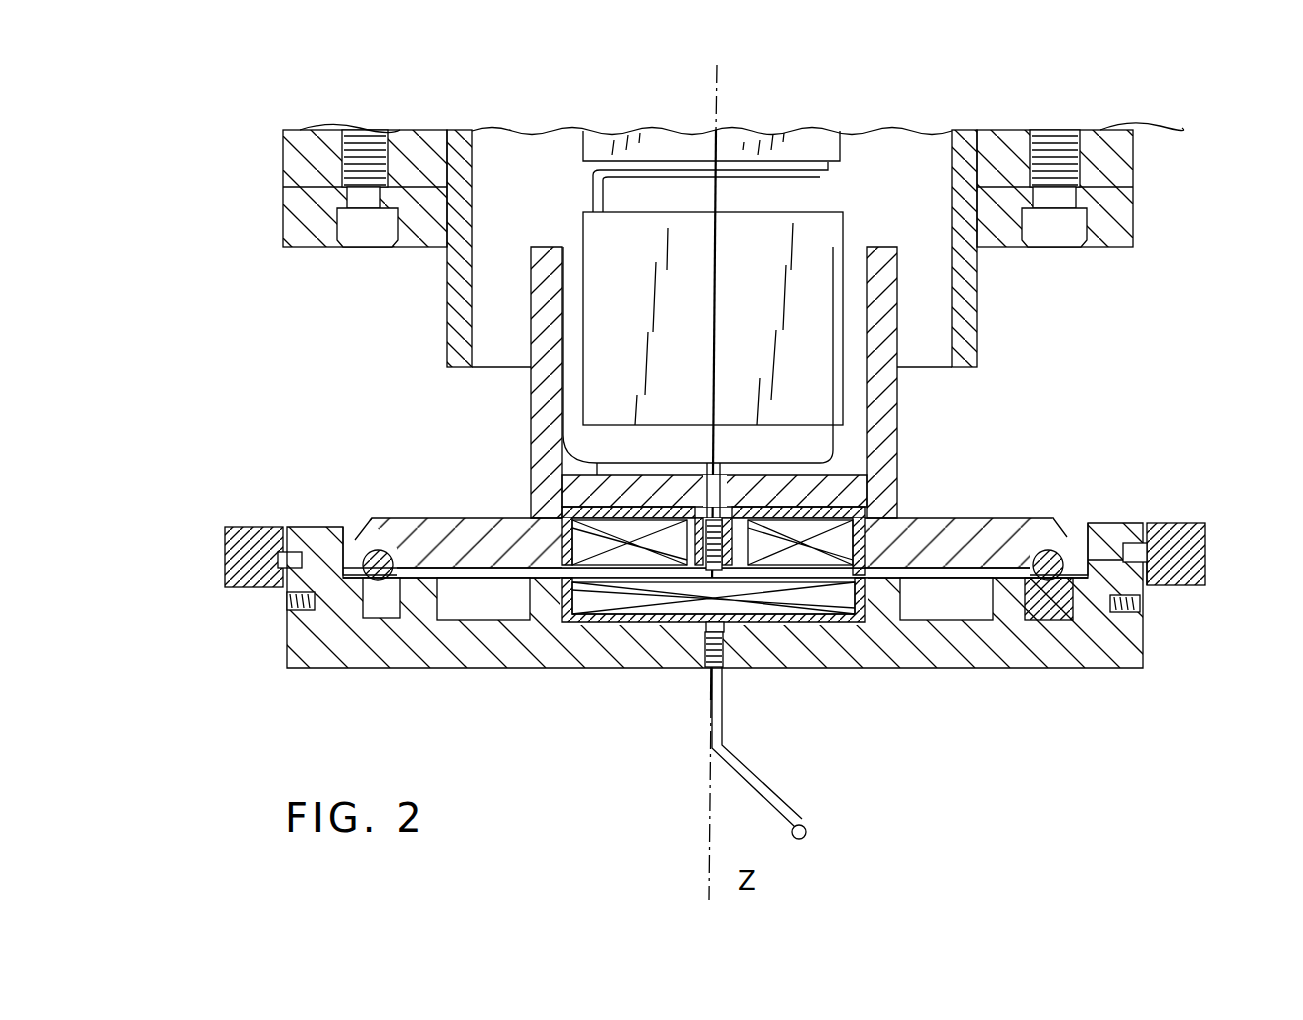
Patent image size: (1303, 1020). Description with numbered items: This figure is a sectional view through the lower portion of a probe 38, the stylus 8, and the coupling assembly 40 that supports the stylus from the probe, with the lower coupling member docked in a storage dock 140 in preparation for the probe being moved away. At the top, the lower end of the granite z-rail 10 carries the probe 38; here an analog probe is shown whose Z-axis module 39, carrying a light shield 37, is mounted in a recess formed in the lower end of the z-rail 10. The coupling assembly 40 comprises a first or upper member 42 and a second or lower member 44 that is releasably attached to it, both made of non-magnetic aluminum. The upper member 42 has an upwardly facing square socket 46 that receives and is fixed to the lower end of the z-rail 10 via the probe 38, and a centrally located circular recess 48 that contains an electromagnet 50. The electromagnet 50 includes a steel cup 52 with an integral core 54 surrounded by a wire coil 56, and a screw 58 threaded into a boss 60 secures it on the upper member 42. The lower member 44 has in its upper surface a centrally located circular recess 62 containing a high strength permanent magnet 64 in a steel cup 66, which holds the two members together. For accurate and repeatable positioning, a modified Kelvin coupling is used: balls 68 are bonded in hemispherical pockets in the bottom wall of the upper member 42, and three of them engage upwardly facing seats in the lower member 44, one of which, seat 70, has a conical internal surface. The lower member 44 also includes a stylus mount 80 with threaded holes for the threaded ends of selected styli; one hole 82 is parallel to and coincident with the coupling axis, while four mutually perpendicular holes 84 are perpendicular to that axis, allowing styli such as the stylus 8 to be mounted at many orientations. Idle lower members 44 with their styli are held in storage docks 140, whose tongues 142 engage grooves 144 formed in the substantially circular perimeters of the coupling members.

The z-rail 10 is at (1117, 162).
The probe 38 is at (613, 137).
The light shield 37 is at (968, 300).
The Z-axis module 39 is at (823, 233).
The square socket 46 is at (875, 402).
The upper member 42 is at (897, 503).
The circular recess 48 is at (895, 492).
The coupling assembly 40 is at (1033, 460).
The steel cup 52 is at (548, 550).
The lower member 44 is at (1126, 668).
The stylus mount 80 is at (873, 653).
The seat 70 is at (1040, 597).
The core 54 is at (563, 508).
The electromagnet 50 is at (637, 507).
The screw 58 is at (577, 522).
The wire coil 56 is at (887, 555).
The boss 60 is at (706, 543).
The permanent magnet 64 is at (590, 600).
The circular recess 62 is at (703, 625).
The steel cup 66 is at (695, 637).
The hole 82 is at (713, 687).
The stylus 8 is at (766, 753).
The balls 68 is at (380, 550).
The holes 84 is at (287, 603).
The storage dock 140 is at (1160, 524).
The tongue 142 is at (1130, 543).
The groove 144 is at (1150, 563).